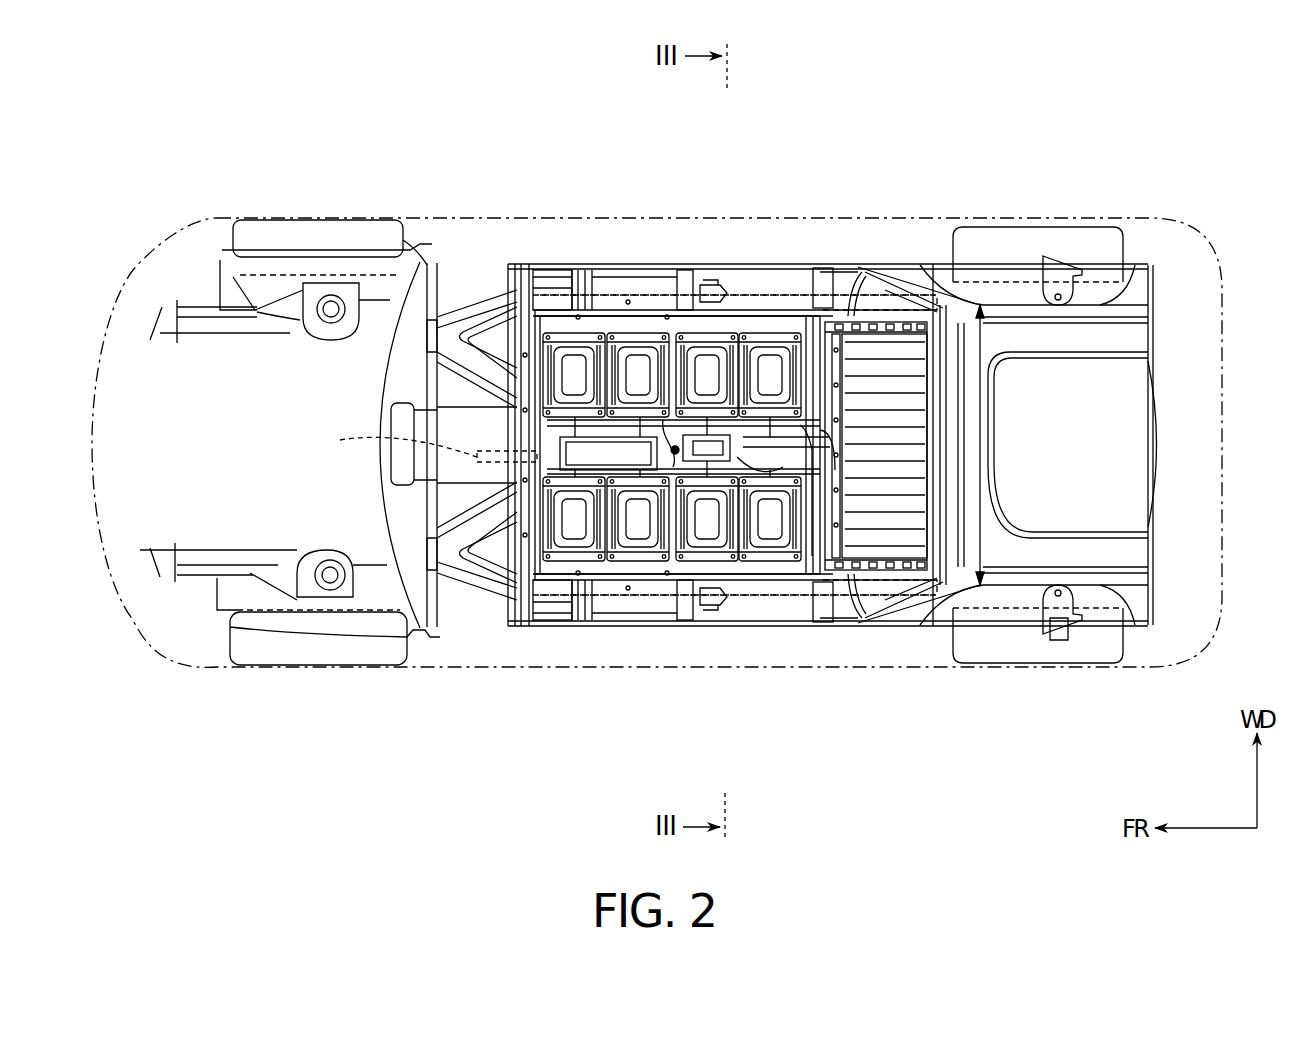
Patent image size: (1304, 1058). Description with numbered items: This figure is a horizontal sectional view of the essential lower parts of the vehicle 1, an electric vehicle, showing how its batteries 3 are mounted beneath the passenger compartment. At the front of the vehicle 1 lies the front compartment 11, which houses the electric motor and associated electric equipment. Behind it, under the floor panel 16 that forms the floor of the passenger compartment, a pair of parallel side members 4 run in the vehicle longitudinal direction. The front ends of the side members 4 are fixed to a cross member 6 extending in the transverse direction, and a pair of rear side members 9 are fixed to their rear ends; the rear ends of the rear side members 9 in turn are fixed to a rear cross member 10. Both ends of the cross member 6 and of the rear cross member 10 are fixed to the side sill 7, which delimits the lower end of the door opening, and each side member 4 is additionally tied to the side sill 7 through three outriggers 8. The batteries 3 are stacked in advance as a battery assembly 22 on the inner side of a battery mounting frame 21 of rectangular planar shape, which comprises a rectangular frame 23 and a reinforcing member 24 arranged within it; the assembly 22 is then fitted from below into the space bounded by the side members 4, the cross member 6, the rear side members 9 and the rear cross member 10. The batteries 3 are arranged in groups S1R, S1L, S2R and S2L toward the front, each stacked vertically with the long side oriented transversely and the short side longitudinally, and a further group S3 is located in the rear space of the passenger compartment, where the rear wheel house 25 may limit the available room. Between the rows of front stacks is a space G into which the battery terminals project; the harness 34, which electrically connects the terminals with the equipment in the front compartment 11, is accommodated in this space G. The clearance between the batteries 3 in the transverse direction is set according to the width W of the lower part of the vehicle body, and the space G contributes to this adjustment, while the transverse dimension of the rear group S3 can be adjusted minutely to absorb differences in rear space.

The vehicle 1 is at (1180, 218).
The batteries 3 is at (792, 433).
The side members 4 is at (700, 290).
The cross member 6 is at (527, 290).
The side sill 7 is at (530, 270).
The outriggers 8 is at (588, 275).
The rear side members 9 is at (1133, 305).
The rear cross member 10 is at (957, 335).
The front compartment 11 is at (207, 459).
The floor panel 16 is at (500, 335).
The battery mounting frame 21 is at (800, 305).
The battery assembly 22 is at (738, 370).
The rectangular frame 23 is at (680, 310).
The reinforcing member 24 is at (812, 556).
The rear wheel house 25 is at (1008, 300).
The harness 34 is at (1012, 410).
The group of batteries S1R is at (645, 320).
The group of batteries S2R is at (772, 320).
The group of batteries S3 is at (887, 315).
The group of batteries S1L is at (644, 573).
The group of batteries S2L is at (727, 573).
The space G is at (545, 447).
The width W is at (975, 445).